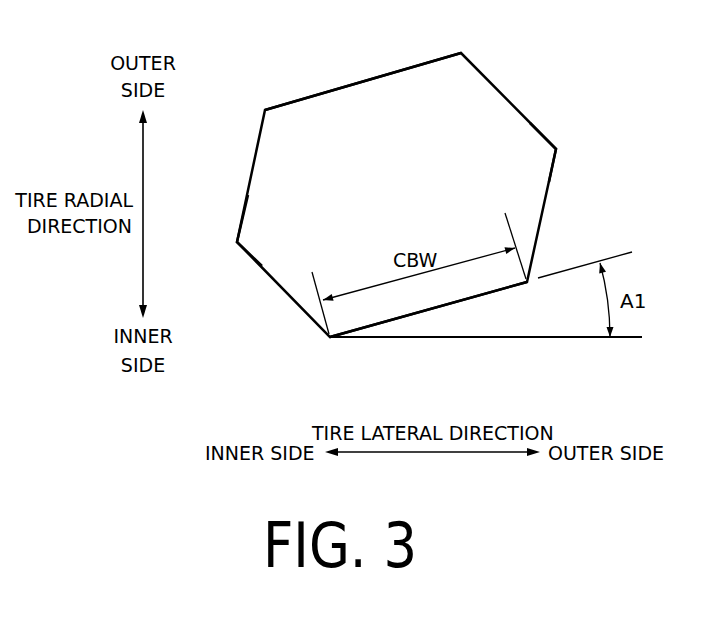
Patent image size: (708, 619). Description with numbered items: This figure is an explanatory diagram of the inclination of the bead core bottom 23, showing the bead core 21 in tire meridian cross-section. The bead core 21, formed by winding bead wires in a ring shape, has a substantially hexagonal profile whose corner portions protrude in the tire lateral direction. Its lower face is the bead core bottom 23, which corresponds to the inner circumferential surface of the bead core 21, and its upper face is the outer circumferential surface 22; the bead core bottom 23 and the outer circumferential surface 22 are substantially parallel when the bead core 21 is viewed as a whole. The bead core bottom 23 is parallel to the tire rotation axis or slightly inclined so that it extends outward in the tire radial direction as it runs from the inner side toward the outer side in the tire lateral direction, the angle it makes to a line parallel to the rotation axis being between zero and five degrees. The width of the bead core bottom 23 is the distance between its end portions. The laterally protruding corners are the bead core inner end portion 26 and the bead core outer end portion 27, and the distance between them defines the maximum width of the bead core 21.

The bead core 21 is at (525, 93).
The outer circumferential surface 22 is at (350, 83).
The bead core bottom 23 is at (443, 306).
The bead core inner end portion 26 is at (237, 242).
The bead core outer end portion 27 is at (556, 149).